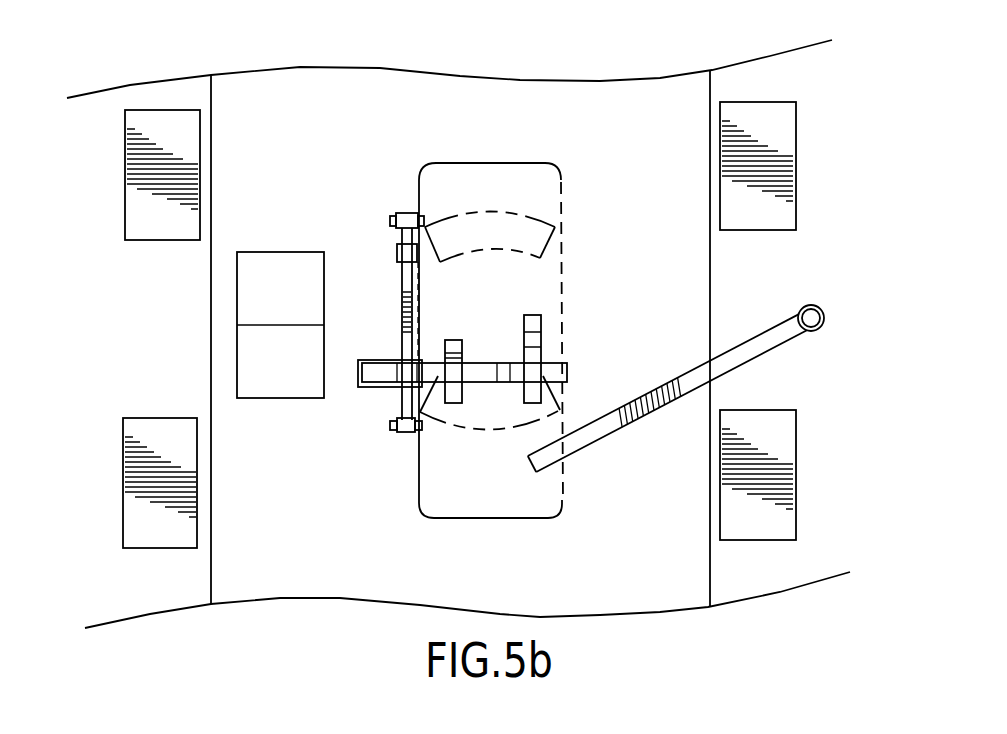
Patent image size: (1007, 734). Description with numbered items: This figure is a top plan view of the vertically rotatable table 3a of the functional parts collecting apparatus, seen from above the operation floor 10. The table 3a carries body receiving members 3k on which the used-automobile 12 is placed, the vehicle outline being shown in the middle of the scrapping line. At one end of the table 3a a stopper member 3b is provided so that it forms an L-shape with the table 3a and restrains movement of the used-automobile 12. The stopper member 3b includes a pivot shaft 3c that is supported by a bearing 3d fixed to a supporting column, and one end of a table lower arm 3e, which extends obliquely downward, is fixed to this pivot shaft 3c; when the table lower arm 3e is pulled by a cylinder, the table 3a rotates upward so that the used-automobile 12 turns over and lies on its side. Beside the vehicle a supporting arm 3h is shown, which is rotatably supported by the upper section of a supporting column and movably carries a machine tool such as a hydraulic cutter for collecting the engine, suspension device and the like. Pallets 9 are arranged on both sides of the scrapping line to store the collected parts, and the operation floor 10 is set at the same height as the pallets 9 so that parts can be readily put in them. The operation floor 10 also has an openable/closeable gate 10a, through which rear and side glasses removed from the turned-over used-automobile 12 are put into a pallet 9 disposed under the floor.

The operation floor 10 is at (650, 97).
The openable/closeable gate 10a is at (250, 313).
The used-automobile 12 is at (510, 170).
The pallet 9 is at (143, 234).
The vertically rotatable table 3a is at (563, 369).
The stopper member 3b is at (397, 252).
The pivot shaft 3c is at (402, 306).
The bearing 3d is at (408, 213).
The table lower arm 3e is at (375, 390).
The supporting arm 3h is at (750, 357).
The body receiving member 3k is at (456, 404).